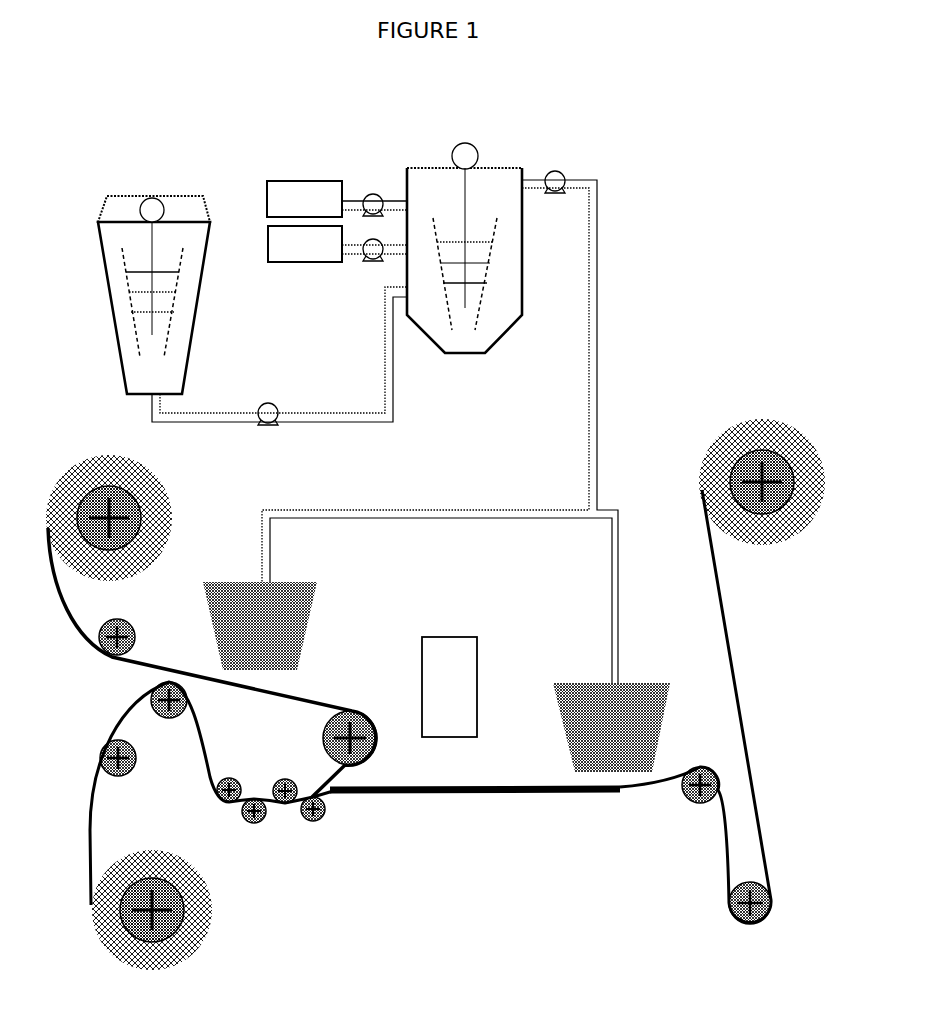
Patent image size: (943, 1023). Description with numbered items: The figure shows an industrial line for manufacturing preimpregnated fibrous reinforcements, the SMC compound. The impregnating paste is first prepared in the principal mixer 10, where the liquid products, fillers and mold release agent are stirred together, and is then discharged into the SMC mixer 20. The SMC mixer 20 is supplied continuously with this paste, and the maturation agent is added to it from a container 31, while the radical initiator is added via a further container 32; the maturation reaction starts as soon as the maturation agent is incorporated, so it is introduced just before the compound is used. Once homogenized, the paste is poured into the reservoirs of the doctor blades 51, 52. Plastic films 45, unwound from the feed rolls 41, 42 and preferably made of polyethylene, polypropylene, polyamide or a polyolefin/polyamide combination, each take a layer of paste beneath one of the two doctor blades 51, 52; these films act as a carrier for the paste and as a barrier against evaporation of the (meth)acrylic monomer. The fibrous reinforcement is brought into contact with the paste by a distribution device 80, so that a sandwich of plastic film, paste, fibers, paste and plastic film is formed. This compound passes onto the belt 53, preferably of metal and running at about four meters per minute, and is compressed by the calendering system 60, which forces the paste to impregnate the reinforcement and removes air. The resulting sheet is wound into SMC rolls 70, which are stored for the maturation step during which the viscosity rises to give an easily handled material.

The principal mixer 10 is at (176, 194).
The SMC mixer 20 is at (498, 167).
The container 31 is at (297, 178).
The container 32 is at (275, 262).
The first film feed roll 41 is at (731, 420).
The second film feed roll 42 is at (65, 465).
The plastic films 45 is at (75, 625).
The doctor blade 51 is at (556, 703).
The doctor blade 52 is at (312, 613).
The belt 53 is at (540, 800).
The calendering system 60 is at (297, 834).
The SMC rolls 70 is at (182, 968).
The distribution device 80 is at (438, 637).